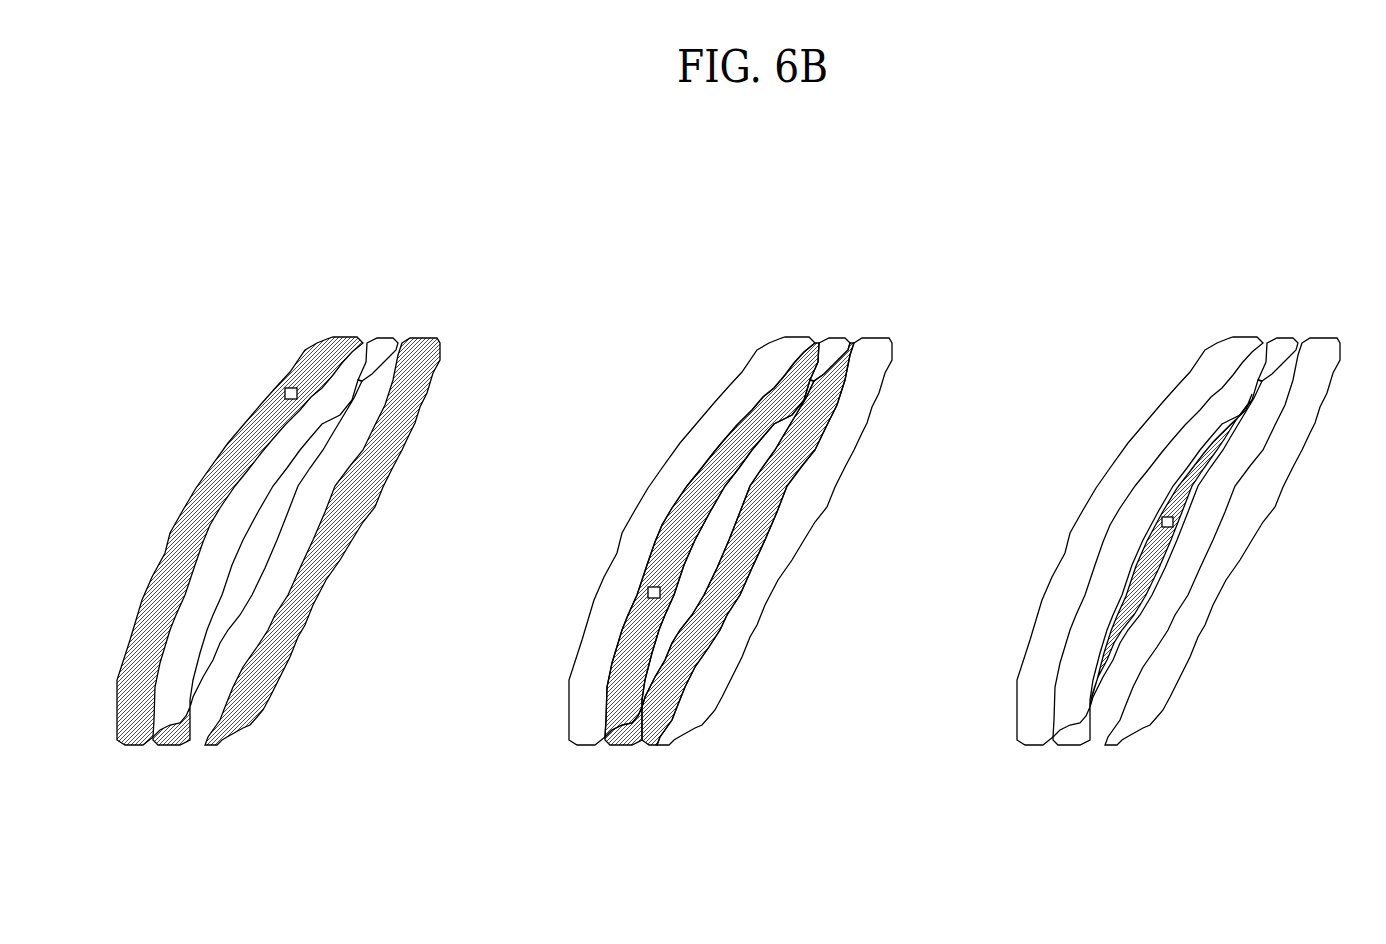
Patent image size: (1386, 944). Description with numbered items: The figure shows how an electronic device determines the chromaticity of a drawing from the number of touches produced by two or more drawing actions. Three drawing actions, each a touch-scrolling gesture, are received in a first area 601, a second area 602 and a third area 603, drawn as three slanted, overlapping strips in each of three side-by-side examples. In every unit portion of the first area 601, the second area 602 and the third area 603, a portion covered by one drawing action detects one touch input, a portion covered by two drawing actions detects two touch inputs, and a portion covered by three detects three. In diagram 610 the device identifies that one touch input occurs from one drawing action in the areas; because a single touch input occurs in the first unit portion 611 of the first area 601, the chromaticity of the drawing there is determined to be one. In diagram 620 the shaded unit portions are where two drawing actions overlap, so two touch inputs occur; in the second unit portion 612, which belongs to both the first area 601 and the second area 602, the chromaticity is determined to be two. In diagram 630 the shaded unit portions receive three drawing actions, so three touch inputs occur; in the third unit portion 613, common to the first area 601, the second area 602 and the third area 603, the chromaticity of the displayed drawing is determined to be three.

The first area 601 is at (1235, 337).
The second area 602 is at (1287, 337).
The third area 603 is at (1337, 338).
The diagram 610 is at (280, 577).
The diagram 620 is at (732, 577).
The diagram 630 is at (1180, 577).
The first unit portion 611 is at (285, 389).
The second unit portion 612 is at (648, 595).
The third unit portion 613 is at (1162, 518).